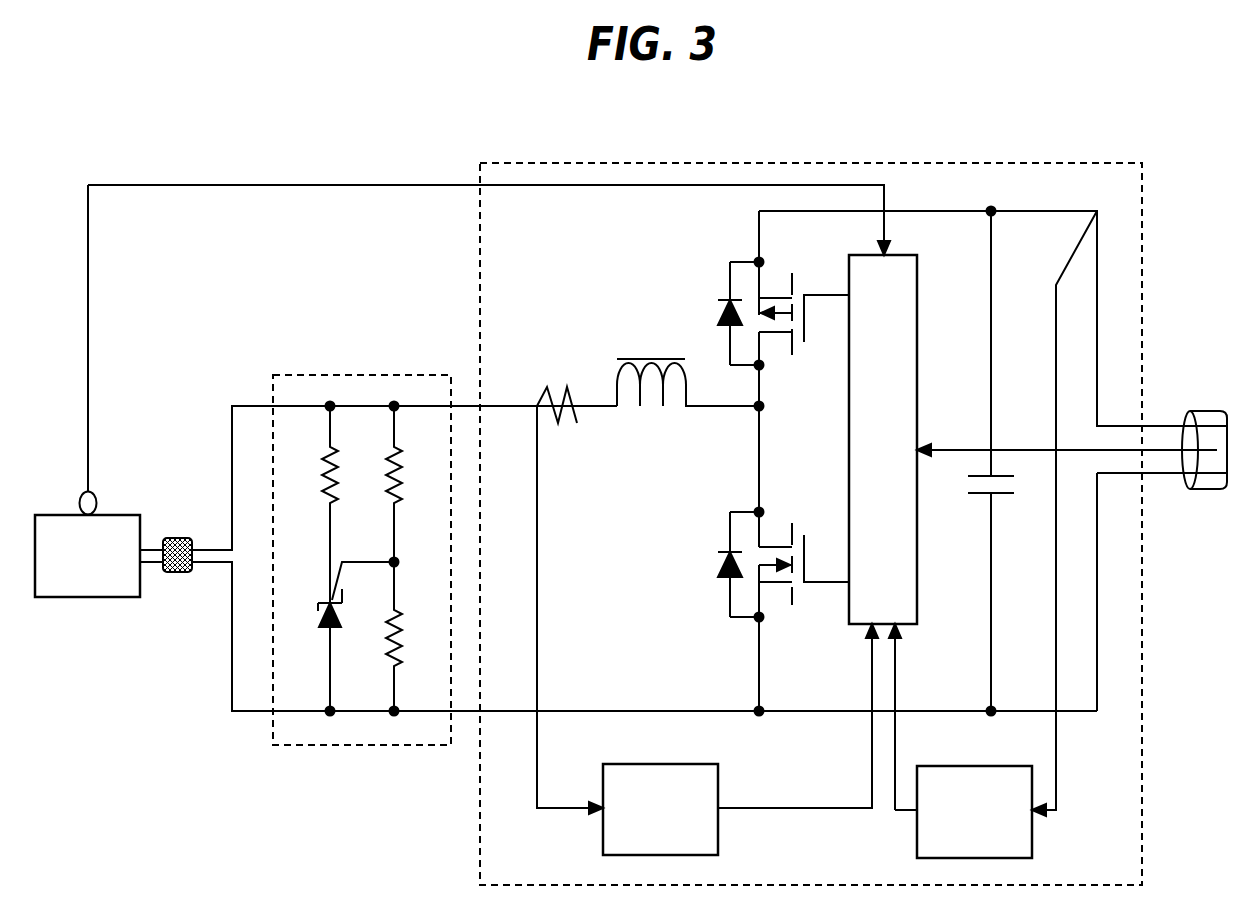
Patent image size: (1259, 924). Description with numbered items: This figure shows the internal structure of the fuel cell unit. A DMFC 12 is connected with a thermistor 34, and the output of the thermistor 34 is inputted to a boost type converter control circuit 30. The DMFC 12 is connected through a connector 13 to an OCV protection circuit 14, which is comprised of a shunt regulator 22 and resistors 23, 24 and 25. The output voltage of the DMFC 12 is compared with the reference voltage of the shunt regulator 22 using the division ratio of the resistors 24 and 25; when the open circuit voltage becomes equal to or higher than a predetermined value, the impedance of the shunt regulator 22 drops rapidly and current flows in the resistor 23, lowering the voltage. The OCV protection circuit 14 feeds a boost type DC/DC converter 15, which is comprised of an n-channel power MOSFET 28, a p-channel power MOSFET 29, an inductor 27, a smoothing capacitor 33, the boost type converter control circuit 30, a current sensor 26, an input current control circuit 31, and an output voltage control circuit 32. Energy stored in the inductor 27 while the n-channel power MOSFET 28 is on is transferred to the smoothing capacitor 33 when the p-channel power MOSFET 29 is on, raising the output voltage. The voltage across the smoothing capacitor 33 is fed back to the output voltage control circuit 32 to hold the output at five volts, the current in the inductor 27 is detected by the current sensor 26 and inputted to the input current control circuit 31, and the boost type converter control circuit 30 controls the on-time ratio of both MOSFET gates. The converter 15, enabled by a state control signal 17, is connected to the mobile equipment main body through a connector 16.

The DMFC 12 is at (88, 597).
The connector 13 is at (178, 575).
The OCV protection circuit 14 is at (385, 377).
The boost type DC/DC converter 15 is at (1070, 163).
The connector 16 is at (1207, 489).
The state control signal 17 is at (958, 445).
The shunt regulator 22 is at (320, 612).
The resistor 23 is at (318, 484).
The resistor 24 is at (378, 484).
The resistor 25 is at (378, 645).
The current sensor 26 is at (557, 383).
The inductor 27 is at (650, 352).
The n-channel power MOSFET 28 is at (725, 546).
The p-channel power MOSFET 29 is at (726, 296).
The boost type converter control circuit 30 is at (905, 252).
The input current control circuit 31 is at (665, 762).
The output voltage control circuit 32 is at (975, 765).
The smoothing capacitor 33 is at (975, 500).
The thermistor 34 is at (97, 497).